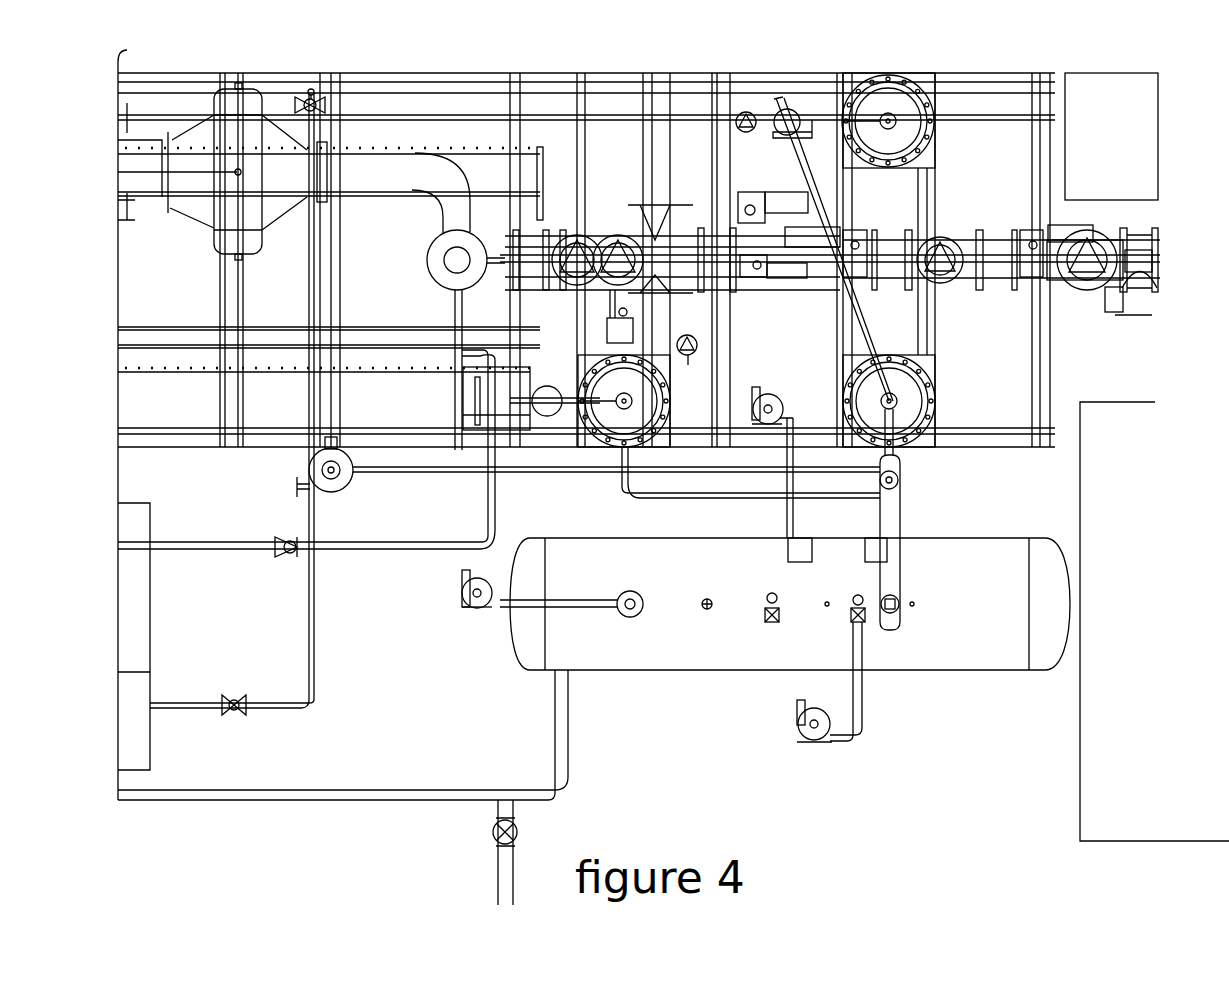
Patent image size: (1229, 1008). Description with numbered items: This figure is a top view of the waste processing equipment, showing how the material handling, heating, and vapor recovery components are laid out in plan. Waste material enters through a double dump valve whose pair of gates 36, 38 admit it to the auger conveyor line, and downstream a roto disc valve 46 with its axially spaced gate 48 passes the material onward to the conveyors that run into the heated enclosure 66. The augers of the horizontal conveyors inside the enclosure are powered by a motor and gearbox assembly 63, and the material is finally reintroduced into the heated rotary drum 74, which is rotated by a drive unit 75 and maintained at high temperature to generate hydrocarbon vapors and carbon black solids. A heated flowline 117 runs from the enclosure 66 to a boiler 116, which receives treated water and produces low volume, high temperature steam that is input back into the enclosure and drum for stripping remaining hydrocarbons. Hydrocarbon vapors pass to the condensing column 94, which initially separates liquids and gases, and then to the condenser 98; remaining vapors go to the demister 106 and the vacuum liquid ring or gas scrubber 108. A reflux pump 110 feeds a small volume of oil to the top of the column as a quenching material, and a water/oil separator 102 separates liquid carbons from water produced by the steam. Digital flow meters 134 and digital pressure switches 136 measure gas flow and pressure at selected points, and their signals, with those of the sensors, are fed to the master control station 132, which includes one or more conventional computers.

The gate 36 is at (1102, 226).
The gate 38 is at (1125, 254).
The roto disc valve 46 is at (830, 226).
The gate 48 is at (925, 234).
The motor and gearbox assembly 63 is at (779, 201).
The heated enclosure 66 is at (198, 160).
The rotary drum 74 is at (432, 300).
The drive unit 75 is at (633, 321).
The condensing column 94 is at (639, 438).
The condenser 98 is at (407, 454).
The water/oil separator 102 is at (1003, 565).
The demister 106 is at (915, 398).
The vacuum liquid ring or gas scrubber 108 is at (919, 117).
The reflux pump 110 is at (759, 422).
The boiler 116 is at (221, 106).
The heated flowline 117 is at (129, 165).
The master control station 132 is at (1115, 113).
The digital flow meter 134 is at (737, 100).
The digital pressure switch 136 is at (756, 100).